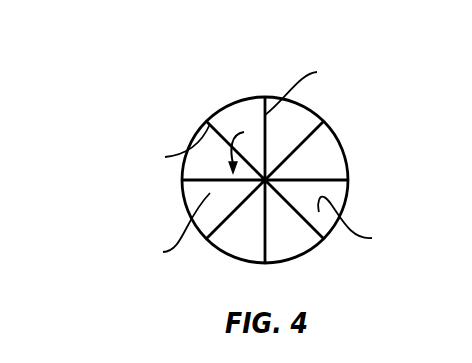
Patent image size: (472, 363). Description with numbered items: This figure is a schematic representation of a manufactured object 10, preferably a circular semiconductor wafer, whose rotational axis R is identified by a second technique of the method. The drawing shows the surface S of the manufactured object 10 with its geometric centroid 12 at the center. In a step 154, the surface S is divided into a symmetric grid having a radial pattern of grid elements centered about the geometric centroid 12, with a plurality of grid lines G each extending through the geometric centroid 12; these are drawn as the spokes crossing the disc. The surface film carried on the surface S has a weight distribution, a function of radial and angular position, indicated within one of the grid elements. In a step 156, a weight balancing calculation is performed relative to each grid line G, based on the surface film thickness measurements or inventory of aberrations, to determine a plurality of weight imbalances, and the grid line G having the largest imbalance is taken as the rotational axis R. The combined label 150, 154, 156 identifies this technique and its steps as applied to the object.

The manufactured object 10 is at (347, 174).
The geometric centroid 12 is at (268, 179).
The weighting pattern 150 is at (211, 67).
The step of dividing the surface into a symmetric grid 154 is at (256, 162).
The step of performing a weight balancing calculation 156 is at (256, 162).